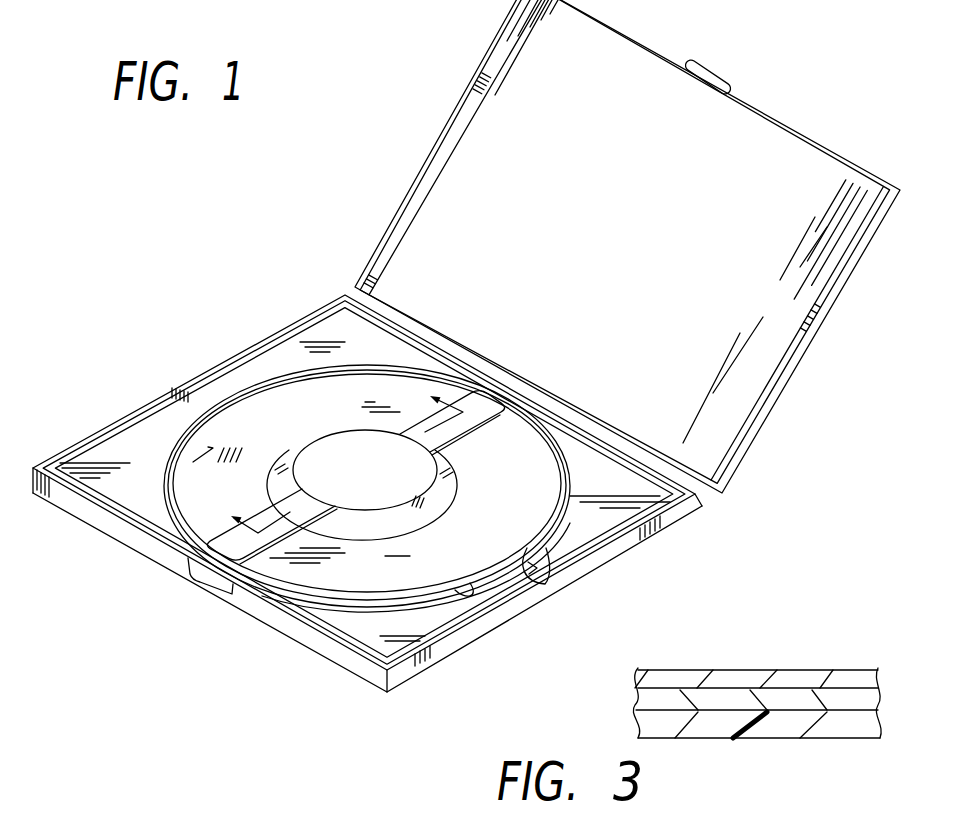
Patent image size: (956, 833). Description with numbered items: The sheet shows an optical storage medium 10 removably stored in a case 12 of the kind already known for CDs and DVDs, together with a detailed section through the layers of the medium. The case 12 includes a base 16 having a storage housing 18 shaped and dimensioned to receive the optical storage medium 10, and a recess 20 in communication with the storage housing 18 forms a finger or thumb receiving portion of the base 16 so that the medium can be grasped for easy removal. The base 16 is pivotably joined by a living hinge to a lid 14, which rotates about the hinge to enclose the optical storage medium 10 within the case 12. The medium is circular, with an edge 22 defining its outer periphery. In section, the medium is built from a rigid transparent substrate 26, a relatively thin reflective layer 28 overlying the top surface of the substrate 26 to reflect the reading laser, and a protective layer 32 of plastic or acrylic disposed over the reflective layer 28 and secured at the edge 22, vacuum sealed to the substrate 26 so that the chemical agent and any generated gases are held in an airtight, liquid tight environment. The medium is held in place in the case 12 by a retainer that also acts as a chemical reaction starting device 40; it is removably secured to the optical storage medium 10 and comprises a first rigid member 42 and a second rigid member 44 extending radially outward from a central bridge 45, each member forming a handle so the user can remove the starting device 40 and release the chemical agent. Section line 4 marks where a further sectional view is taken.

In FIG. 1, the optical storage medium 10 is at (284, 582).
In FIG. 1, the case 12 is at (670, 522).
In FIG. 1, the lid 14 is at (440, 182).
In FIG. 1, the base 16 is at (593, 533).
In FIG. 1, the storage housing 18 is at (452, 595).
In FIG. 1, the recess 20 is at (530, 552).
In FIG. 1, the edge 22 is at (282, 382).
In FIG. 3, the substrate 26 is at (757, 728).
In FIG. 3, the reflective layer 28 is at (847, 700).
In FIG. 1, the protective layer 32 is at (160, 512).
In FIG. 3, the protective layer 32 is at (818, 670).
In FIG. 1, the chemical reaction starting device 40 is at (300, 455).
In FIG. 1, the first rigid member 42 is at (215, 556).
In FIG. 1, the second rigid member 44 is at (486, 398).
In FIG. 1, the bridge 45 is at (362, 485).
In FIG. 1, the section line 4- 4 is at (329, 455).